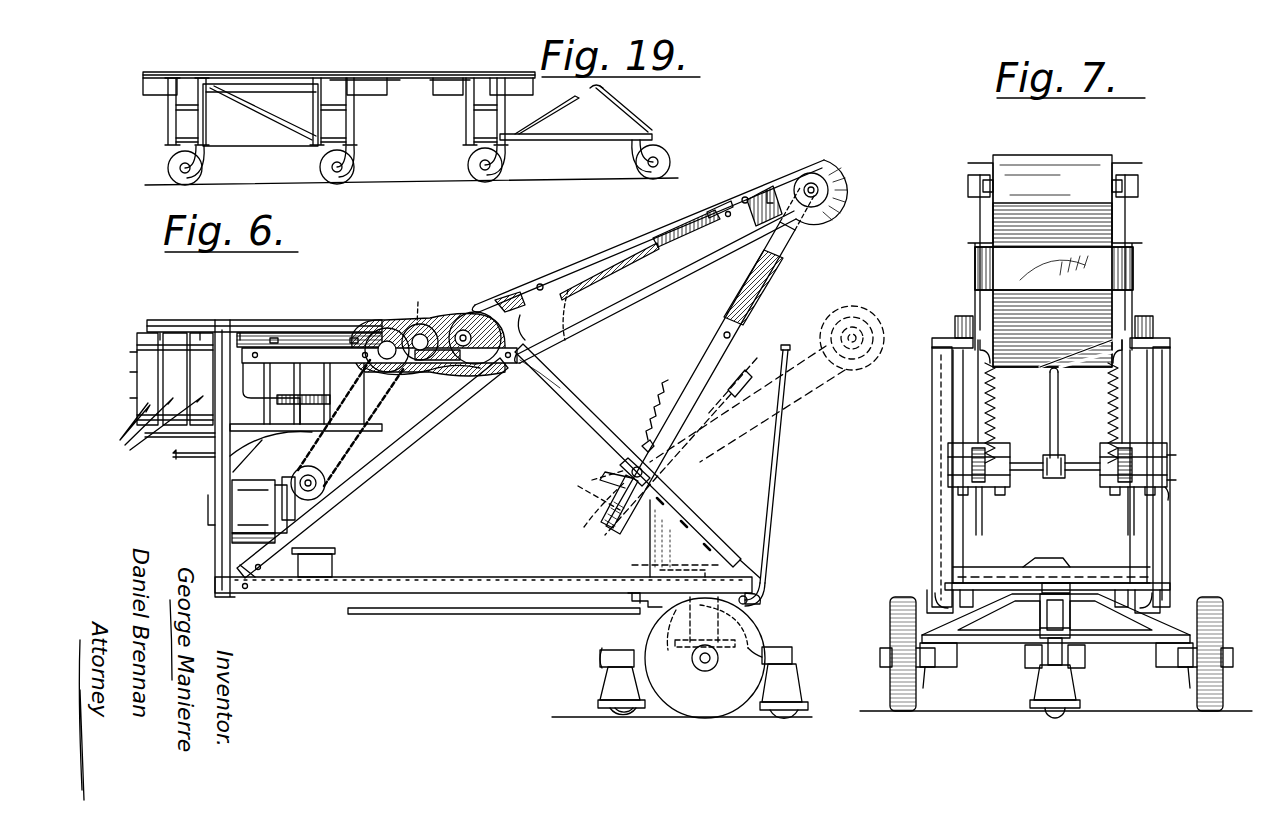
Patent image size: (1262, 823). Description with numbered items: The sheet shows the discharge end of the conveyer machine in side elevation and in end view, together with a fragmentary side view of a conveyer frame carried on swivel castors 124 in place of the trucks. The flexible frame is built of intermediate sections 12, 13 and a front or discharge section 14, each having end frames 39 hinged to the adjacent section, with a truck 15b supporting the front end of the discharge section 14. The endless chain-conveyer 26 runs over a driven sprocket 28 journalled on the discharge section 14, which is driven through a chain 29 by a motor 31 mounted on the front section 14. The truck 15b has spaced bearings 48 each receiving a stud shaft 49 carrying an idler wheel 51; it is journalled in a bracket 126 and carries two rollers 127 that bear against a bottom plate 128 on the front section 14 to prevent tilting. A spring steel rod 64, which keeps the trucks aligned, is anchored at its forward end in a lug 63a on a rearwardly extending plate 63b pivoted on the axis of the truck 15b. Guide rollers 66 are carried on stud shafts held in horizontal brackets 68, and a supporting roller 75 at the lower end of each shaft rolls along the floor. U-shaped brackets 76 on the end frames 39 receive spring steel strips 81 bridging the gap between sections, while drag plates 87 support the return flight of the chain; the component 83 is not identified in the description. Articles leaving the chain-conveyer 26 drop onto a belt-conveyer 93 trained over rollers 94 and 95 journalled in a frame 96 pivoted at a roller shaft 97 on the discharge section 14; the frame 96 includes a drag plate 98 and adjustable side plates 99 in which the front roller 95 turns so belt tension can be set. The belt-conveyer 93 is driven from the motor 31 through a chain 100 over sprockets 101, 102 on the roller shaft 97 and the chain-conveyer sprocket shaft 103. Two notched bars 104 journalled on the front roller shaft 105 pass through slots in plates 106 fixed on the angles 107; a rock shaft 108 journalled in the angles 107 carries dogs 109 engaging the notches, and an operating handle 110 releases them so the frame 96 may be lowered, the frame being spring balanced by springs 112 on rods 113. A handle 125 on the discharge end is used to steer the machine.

In FIG. 19, the intermediate section 12 is at (339, 91).
In FIG. 19, the intermediate section 13 is at (260, 115).
In FIG. 19, the front or discharge section 14 is at (576, 112).
In FIG. 6, the front or discharge section 14 is at (322, 596).
In FIG. 7, the idler truck 15b is at (1000, 640).
In FIG. 6, the endless chain-conveyer 26 is at (232, 300).
In FIG. 6, the driven sprocket 28 is at (360, 398).
In FIG. 6, the chain 29 is at (350, 450).
In FIG. 6, the motor 31 is at (245, 515).
In FIG. 19, the end frame 39 is at (200, 120).
In FIG. 6, the end frame 39 is at (215, 528).
In FIG. 7, the bearings 48 is at (947, 667).
In FIG. 6, the stud shaft 49 is at (708, 662).
In FIG. 7, the stud shaft 49 is at (885, 667).
In FIG. 6, the idler wheel 51 is at (708, 703).
In FIG. 7, the idler wheel 51 is at (1212, 596).
In FIG. 6, the lug 63a is at (640, 612).
In FIG. 6, the rearwardly extending plate 63b is at (671, 644).
In FIG. 7, the rearwardly extending plate 63b is at (1065, 583).
In FIG. 6, the spring steel rod 64 is at (470, 615).
In FIG. 6, the guide roller 66 is at (600, 692).
In FIG. 7, the guide roller 66 is at (1080, 705).
In FIG. 6, the bracket 68 is at (600, 653).
In FIG. 7, the bracket 68 is at (1045, 665).
In FIG. 6, the supporting roller 75 is at (622, 716).
In FIG. 7, the supporting roller 75 is at (1052, 715).
In FIG. 19, the U-shaped bracket 76 is at (446, 82).
In FIG. 6, the U-shaped bracket 76 is at (245, 372).
In FIG. 6, the spring steel strips 81 is at (130, 378).
In FIG. 6, the slats 83 is at (145, 423).
In FIG. 6, the drag plate 87 is at (173, 455).
In FIG. 6, the belt-conveyer 93 is at (568, 290).
In FIG. 7, the belt-conveyer 93 is at (1050, 172).
In FIG. 6, the roller 94 is at (462, 330).
In FIG. 6, the front roller 95 is at (815, 162).
In FIG. 7, the front roller 95 is at (1115, 168).
In FIG. 6, the frame 96 is at (625, 255).
In FIG. 6, the roller shaft 97 is at (500, 300).
In FIG. 6, the drag plate 98 is at (540, 284).
In FIG. 6, the adjustable side plates 99 is at (762, 218).
In FIG. 6, the chain 100 is at (418, 320).
In FIG. 6, the sprocket 101 is at (383, 330).
In FIG. 6, the sprocket 102 is at (412, 372).
In FIG. 6, the chain-conveyer sprocket shaft 103 is at (385, 340).
In FIG. 6, the notched bars 104 is at (712, 345).
In FIG. 7, the notched bars 104 is at (1130, 405).
In FIG. 6, the front roller shaft 105 is at (818, 190).
In FIG. 6, the plates 106 is at (655, 485).
In FIG. 7, the plates 106 is at (1168, 490).
In FIG. 6, the angles 107 is at (580, 405).
In FIG. 7, the angles 107 is at (1170, 528).
In FIG. 6, the rock shaft 108 is at (600, 478).
In FIG. 7, the rock shaft 108 is at (1034, 475).
In FIG. 6, the dogs 109 is at (642, 447).
In FIG. 7, the dogs 109 is at (948, 450).
In FIG. 6, the operating handle 110 is at (742, 372).
In FIG. 7, the operating handle 110 is at (1058, 408).
In FIG. 7, the springs 112 is at (1020, 418).
In FIG. 6, the rods 113 is at (732, 333).
In FIG. 7, the rods 113 is at (1010, 350).
In FIG. 19, the swivel castors 124 is at (320, 168).
In FIG. 6, the handle 125 is at (778, 470).
In FIG. 7, the handle 125 is at (932, 518).
In FIG. 6, the bracket 126 is at (635, 565).
In FIG. 7, the bracket 126 is at (1048, 560).
In FIG. 7, the rollers 127 is at (930, 595).
In FIG. 7, the bottom plate 128 is at (992, 583).